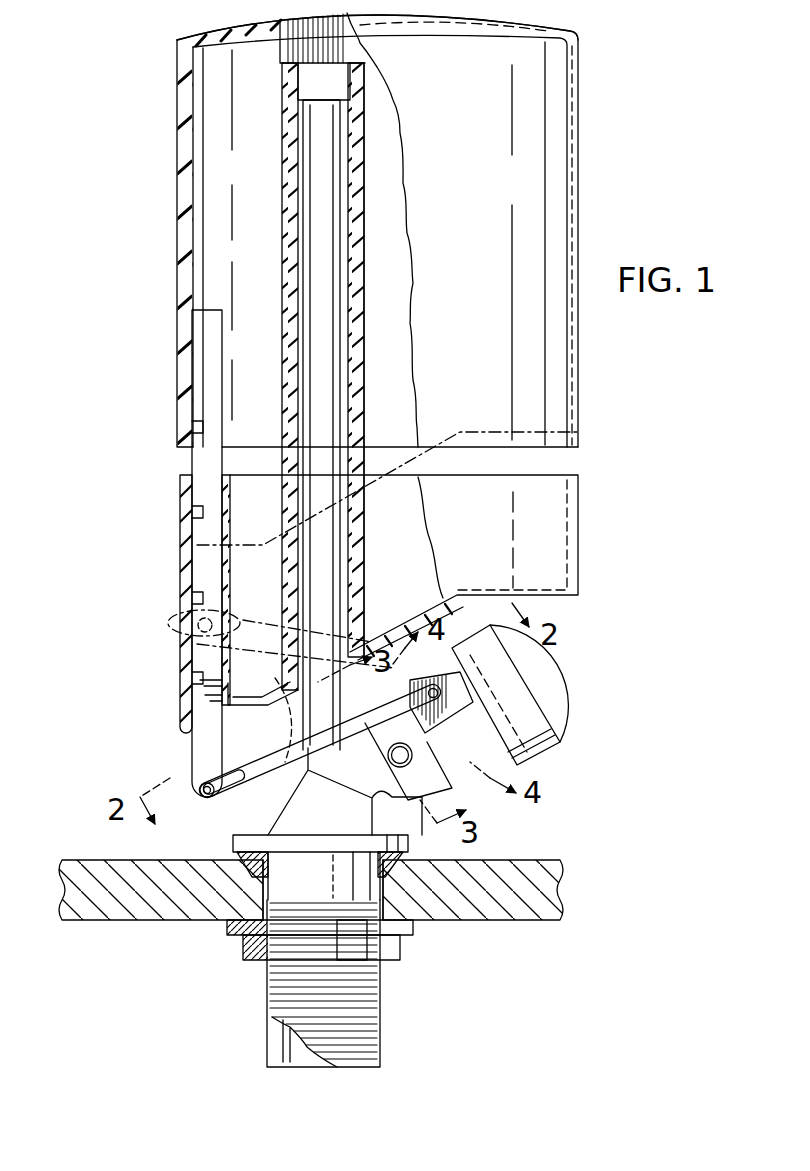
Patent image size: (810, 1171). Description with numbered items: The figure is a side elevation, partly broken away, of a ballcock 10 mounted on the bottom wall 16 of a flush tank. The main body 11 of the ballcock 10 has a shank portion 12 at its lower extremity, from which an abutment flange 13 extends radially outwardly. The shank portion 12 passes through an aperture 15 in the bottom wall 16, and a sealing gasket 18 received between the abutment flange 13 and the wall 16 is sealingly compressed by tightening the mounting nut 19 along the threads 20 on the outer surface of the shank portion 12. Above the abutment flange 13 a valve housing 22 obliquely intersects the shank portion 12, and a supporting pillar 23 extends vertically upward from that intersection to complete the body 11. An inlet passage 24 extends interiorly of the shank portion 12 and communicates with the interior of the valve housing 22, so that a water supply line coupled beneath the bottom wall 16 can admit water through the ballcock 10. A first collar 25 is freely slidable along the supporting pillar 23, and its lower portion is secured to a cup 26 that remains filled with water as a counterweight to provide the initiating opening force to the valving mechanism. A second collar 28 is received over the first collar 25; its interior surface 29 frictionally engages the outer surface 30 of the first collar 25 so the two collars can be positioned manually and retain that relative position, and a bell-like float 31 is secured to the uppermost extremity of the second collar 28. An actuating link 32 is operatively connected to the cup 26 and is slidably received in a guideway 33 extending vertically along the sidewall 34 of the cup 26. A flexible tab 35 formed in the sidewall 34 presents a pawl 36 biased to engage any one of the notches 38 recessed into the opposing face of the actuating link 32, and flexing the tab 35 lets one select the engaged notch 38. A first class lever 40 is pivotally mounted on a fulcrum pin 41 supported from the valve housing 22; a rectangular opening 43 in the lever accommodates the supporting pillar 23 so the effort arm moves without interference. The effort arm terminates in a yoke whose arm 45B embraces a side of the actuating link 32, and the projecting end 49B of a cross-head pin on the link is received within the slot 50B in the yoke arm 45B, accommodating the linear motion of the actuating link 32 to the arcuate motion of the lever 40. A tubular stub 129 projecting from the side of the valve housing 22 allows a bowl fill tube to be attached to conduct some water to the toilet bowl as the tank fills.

The ballcock 10 is at (663, 410).
The main body 11 is at (262, 890).
The shank portion 12 is at (360, 888).
The abutment flange 13 is at (408, 846).
The aperture 15 is at (392, 937).
The bottom wall 16 is at (525, 918).
The sealing gasket 18 is at (397, 868).
The mounting nut 19 is at (390, 952).
The threads 20 is at (362, 1008).
The valve housing 22 is at (464, 782).
The supporting pillar 23 is at (325, 293).
The inlet passage 24 is at (297, 1050).
The first collar 25 is at (333, 88).
The cup 26 is at (560, 537).
The second collar 28 is at (360, 228).
The interior surface 29 is at (355, 180).
The outer surface 30 is at (360, 323).
The float 31 is at (533, 122).
The actuating link 32 is at (194, 749).
The guideway 33 is at (228, 525).
The sidewall 34 is at (192, 490).
The flexible tab 35 is at (190, 696).
The pawl 36 is at (190, 678).
The notches 38 is at (190, 430).
The first class lever 40 is at (274, 776).
The fulcrum pin 41 is at (440, 692).
The rectangular opening 43 is at (263, 710).
The yoke arm 45B is at (202, 805).
The projecting end of pin 49B is at (200, 783).
The slot 50B is at (232, 778).
The tubular stub 129 is at (420, 798).